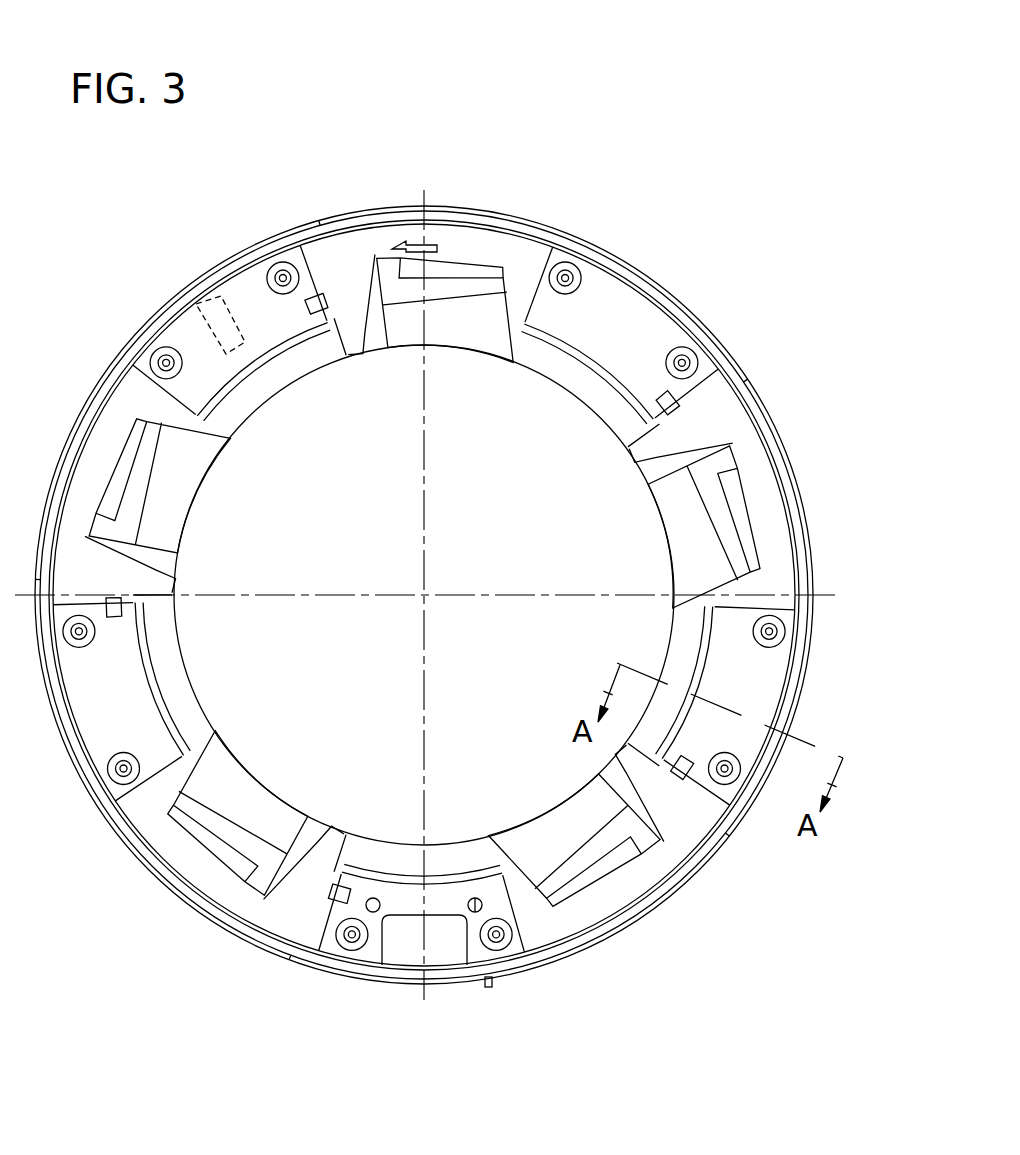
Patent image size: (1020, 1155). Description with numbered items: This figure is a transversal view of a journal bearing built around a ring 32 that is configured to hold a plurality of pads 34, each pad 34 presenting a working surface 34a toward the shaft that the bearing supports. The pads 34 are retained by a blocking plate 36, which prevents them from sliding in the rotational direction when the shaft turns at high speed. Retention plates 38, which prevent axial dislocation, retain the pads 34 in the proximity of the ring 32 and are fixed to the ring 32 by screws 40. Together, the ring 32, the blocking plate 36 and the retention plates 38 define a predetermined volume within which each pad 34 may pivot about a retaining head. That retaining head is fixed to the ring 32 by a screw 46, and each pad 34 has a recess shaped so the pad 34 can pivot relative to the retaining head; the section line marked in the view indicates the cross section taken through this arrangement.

The ring 32 is at (797, 686).
The pad 34 is at (563, 368).
The working surface 34a is at (597, 420).
The blocking plate 36 is at (683, 425).
The retention plate 38 is at (610, 310).
The screw 40 is at (285, 262).
The screw 46 is at (214, 312).